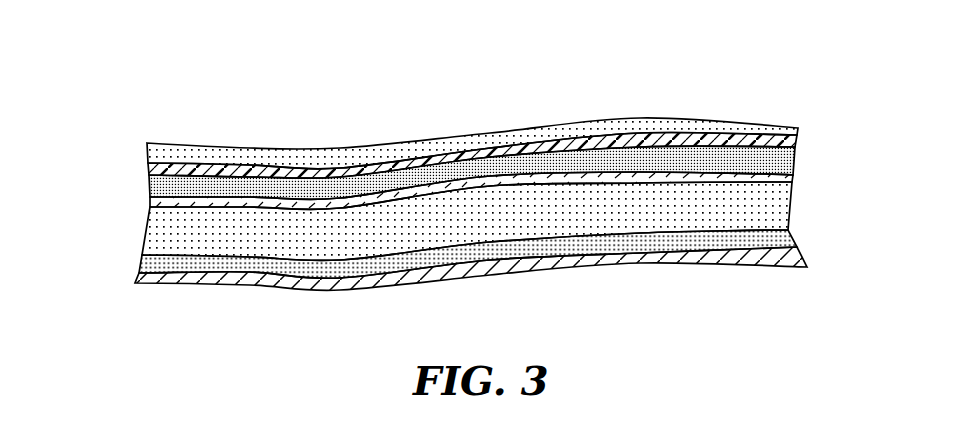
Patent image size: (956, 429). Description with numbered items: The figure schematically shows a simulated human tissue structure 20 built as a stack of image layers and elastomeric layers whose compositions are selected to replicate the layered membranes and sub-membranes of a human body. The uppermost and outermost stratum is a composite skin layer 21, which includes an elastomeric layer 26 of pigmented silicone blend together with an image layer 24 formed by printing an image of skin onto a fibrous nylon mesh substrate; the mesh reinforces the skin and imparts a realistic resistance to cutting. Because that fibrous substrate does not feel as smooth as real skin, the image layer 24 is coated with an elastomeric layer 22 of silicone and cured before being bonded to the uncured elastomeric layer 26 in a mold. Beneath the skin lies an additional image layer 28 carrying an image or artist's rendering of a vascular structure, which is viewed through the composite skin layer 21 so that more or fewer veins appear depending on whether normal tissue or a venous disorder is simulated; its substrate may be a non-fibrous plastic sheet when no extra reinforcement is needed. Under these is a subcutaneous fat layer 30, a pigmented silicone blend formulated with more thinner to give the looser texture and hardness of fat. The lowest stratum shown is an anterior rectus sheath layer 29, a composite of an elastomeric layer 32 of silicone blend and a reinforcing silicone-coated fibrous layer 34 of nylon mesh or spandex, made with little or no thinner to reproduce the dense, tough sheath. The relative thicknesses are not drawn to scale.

The simulated human tissue structure 20 is at (458, 159).
The composite skin layer 21 is at (447, 159).
The elastomeric layer 22 is at (147, 153).
The image layer 24 is at (150, 167).
The elastomeric layer 26 is at (150, 186).
The image layer 28 is at (792, 180).
The anterior rectus sheath layer 29 is at (462, 260).
The subcutaneous fat layer 30 is at (150, 232).
The elastomeric layer 32 is at (141, 263).
The fibrous layer 34 is at (138, 278).